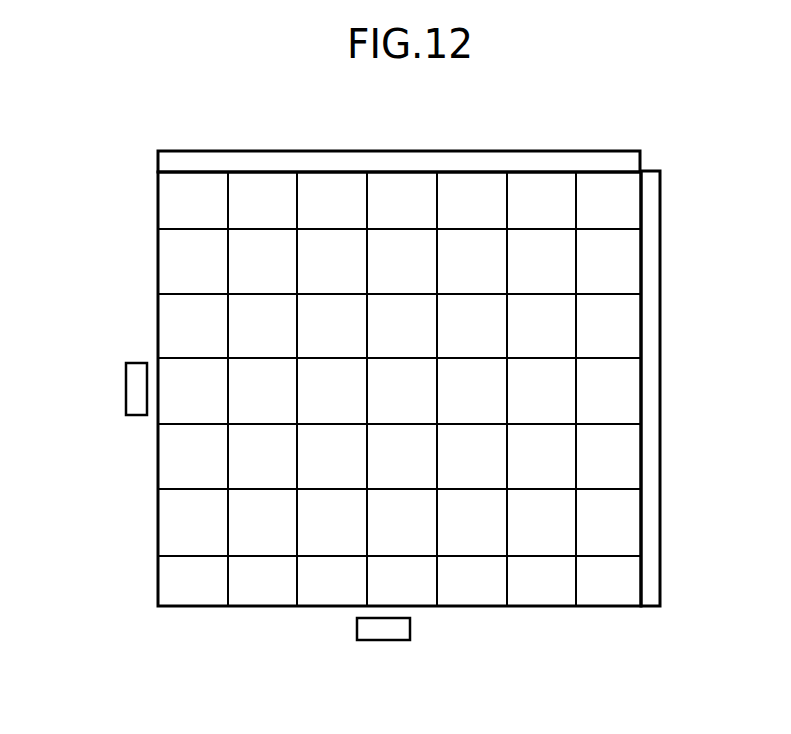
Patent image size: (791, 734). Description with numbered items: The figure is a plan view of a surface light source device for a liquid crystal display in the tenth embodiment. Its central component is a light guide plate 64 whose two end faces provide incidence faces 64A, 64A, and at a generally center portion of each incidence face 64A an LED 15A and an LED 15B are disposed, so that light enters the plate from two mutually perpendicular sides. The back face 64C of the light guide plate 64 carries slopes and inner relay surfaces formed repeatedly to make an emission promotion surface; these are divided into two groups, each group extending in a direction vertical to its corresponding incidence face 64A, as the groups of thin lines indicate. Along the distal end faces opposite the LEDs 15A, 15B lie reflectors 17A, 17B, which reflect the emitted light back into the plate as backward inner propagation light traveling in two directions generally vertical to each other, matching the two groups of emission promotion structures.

The light guide plate 64 is at (613, 593).
The incidence face 64A is at (158, 190).
The back face 64C is at (258, 593).
The reflector 17A is at (394, 166).
The reflector 17B is at (651, 378).
The LED 15A is at (138, 385).
The LED 15B is at (383, 632).